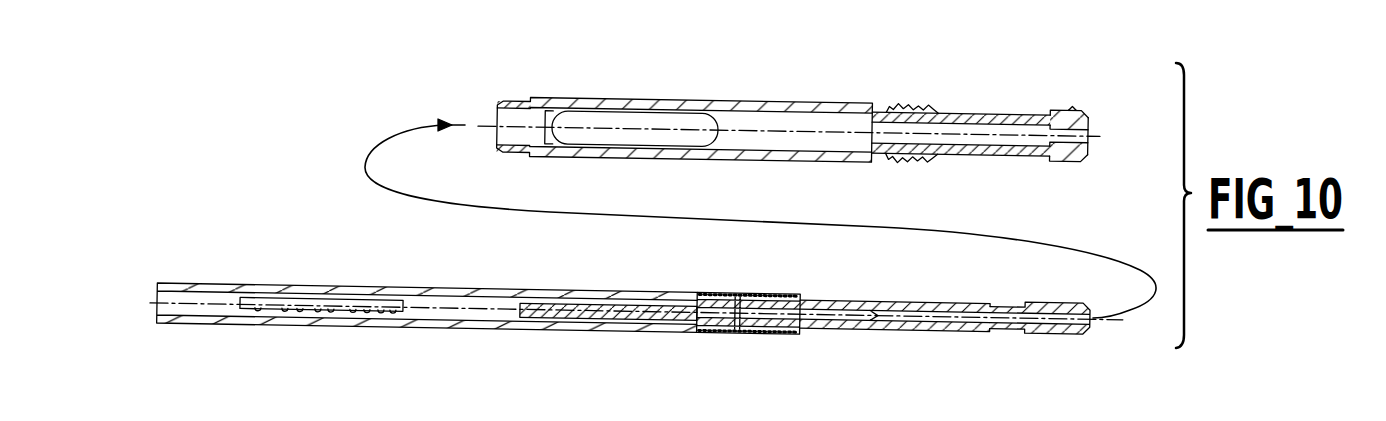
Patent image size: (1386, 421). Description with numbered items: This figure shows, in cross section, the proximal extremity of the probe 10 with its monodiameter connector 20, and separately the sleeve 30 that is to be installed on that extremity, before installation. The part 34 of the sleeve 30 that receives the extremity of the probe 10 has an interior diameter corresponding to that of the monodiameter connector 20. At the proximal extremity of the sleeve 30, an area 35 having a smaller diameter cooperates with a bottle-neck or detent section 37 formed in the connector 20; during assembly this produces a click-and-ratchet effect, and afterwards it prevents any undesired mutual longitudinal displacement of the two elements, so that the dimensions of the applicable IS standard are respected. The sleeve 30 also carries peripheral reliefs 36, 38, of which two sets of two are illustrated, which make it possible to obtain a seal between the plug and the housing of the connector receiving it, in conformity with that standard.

The probe 10 is at (330, 290).
The monodiameter connector 20 is at (918, 300).
The sleeve 30 is at (745, 100).
The part of sleeve 34 is at (1013, 158).
The area having a smaller diameter 35 is at (1090, 130).
The peripheral relief 36 is at (905, 100).
The bottle-neck or detent section 37 is at (1010, 305).
The peripheral relief 38 is at (1060, 108).